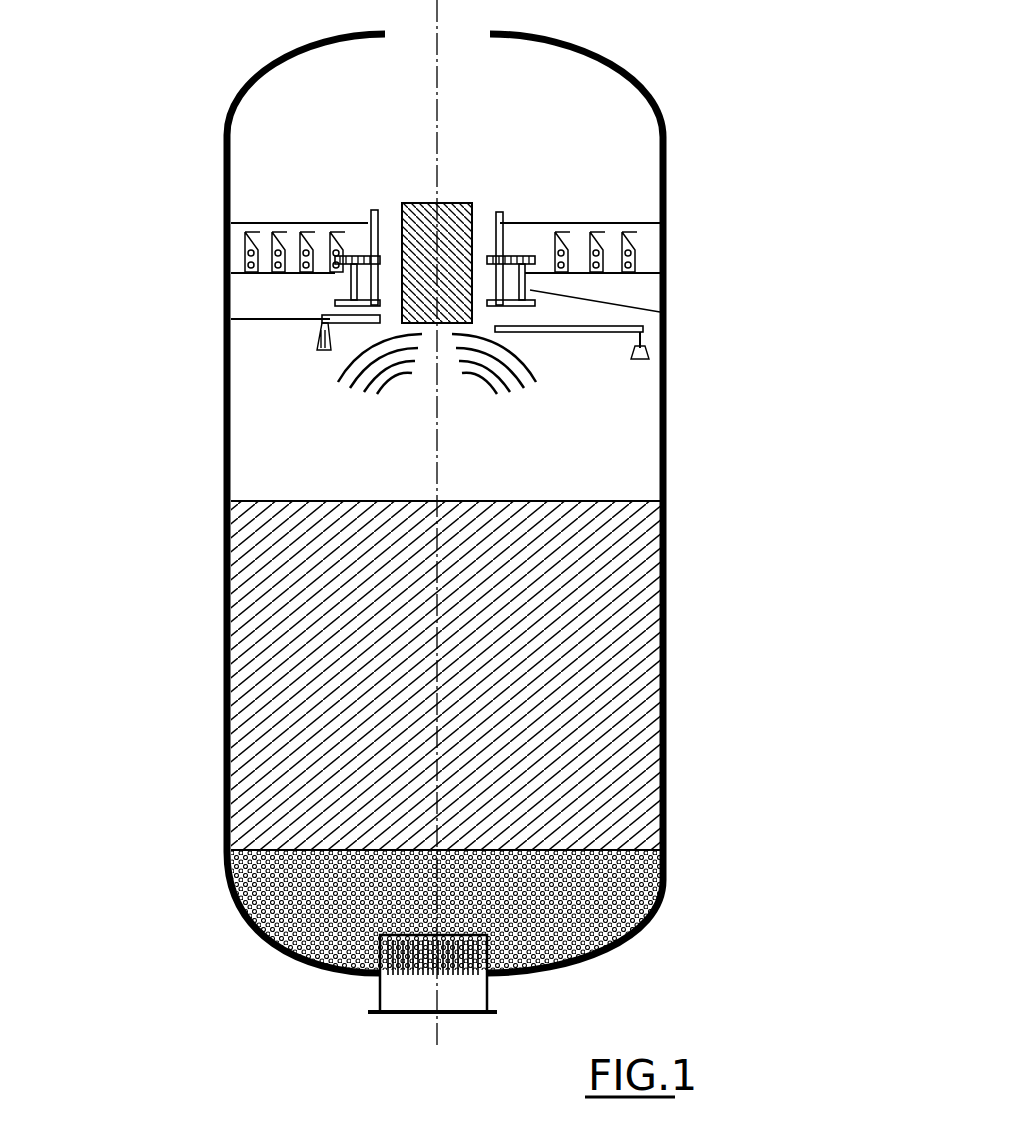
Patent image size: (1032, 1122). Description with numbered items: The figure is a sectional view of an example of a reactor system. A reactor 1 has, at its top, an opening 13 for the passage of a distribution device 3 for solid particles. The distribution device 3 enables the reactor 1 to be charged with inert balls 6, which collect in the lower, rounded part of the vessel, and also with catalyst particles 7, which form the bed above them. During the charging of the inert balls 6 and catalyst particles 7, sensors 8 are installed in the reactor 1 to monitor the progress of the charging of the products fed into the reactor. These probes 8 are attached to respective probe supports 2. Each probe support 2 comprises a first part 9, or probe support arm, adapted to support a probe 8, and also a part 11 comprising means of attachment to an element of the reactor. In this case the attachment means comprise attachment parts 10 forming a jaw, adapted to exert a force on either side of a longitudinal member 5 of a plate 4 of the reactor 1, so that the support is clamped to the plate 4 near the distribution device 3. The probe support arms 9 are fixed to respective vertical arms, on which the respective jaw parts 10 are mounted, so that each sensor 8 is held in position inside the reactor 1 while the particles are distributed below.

The reactor 1 is at (672, 600).
The probe support 2 is at (545, 339).
The distribution device 3 is at (400, 203).
The plate 4 is at (620, 223).
The longitudinal member 5 is at (535, 290).
The inert balls 6 is at (588, 905).
The catalyst particles 7 is at (625, 788).
The sensor 8 is at (641, 358).
The probe support arm 9 is at (350, 348).
The attachment part 10 is at (330, 325).
The attachment part of probe support 11 is at (500, 205).
The opening 13 is at (393, 170).